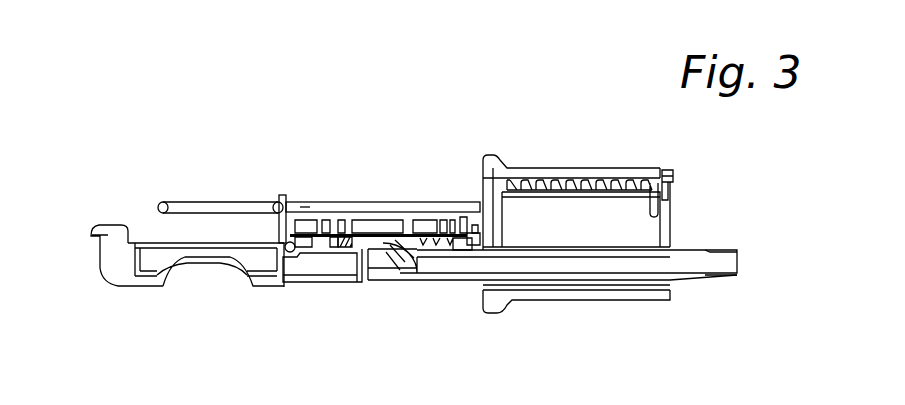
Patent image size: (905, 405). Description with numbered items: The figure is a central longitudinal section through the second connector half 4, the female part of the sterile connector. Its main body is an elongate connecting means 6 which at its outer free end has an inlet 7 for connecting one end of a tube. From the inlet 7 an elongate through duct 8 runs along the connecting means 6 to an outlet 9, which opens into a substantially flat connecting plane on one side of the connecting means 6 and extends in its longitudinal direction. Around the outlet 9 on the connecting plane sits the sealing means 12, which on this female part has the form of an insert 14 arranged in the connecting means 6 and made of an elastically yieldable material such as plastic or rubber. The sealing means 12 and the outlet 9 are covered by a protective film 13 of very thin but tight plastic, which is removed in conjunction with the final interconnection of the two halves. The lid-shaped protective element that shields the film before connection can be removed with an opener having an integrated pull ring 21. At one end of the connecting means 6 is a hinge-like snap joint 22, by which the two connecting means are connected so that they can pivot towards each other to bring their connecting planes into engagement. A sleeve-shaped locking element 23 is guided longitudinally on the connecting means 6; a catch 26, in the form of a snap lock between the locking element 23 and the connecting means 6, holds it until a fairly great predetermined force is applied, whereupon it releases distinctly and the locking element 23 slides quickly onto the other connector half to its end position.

The second connector half 4 is at (537, 158).
The connecting means 6 is at (367, 262).
The inlet 7 is at (699, 262).
The through duct 8 is at (597, 258).
The outlet 9 is at (388, 240).
The sealing means 12 is at (337, 250).
The protective film 13 is at (402, 272).
The insert 14 is at (353, 243).
The pull ring 21 is at (182, 208).
The hinge-like snap joint 22 is at (91, 238).
The locking element 23 is at (640, 172).
The catch 26 is at (597, 188).